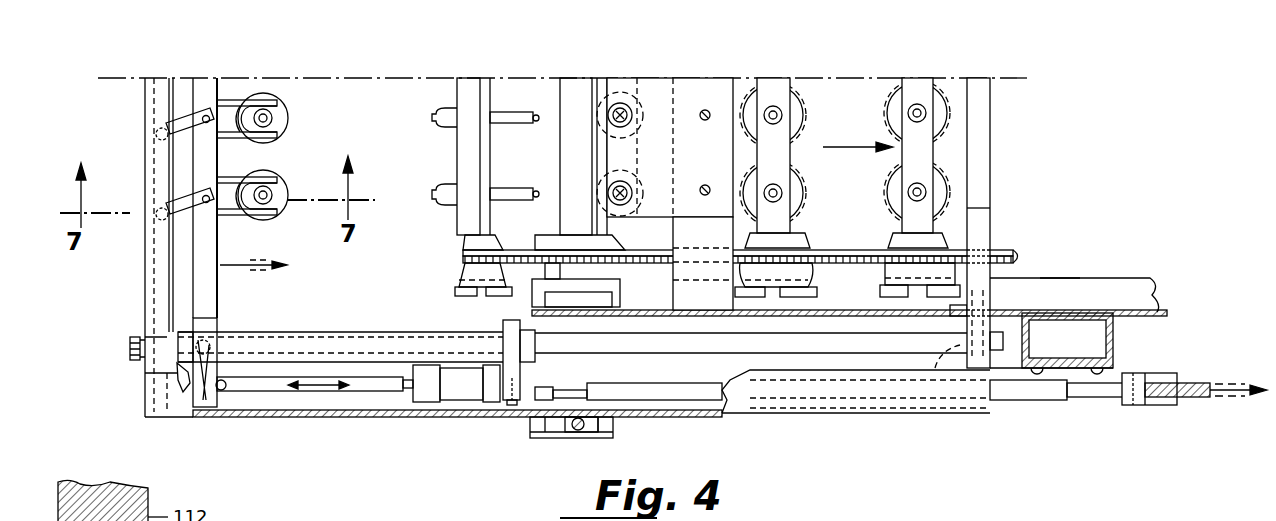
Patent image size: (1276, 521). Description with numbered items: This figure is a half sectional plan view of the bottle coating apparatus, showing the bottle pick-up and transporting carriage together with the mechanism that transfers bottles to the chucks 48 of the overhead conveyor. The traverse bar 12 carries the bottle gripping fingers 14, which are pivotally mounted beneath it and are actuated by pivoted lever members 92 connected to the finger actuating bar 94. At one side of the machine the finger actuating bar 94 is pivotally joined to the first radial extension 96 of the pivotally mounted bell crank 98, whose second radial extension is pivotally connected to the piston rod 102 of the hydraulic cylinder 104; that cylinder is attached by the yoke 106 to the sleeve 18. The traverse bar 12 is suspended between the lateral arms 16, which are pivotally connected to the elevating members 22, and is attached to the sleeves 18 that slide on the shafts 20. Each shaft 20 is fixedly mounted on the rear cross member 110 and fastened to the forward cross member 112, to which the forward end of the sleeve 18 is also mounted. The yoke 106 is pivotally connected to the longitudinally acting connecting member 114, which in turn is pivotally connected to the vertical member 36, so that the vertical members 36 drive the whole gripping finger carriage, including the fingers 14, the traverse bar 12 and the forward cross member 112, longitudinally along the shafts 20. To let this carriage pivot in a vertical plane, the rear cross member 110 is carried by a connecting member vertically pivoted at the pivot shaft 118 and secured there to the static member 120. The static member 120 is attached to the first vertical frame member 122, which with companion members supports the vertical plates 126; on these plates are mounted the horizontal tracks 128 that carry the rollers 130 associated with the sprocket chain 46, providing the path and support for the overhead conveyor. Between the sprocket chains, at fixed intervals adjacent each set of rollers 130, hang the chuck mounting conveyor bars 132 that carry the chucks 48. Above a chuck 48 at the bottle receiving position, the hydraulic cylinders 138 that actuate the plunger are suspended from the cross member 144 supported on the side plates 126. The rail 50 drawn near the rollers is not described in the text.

The traverse bar 12 is at (217, 292).
The bottle gripping fingers 14 is at (287, 188).
The lateral arms 16 is at (316, 428).
The sleeve 18 is at (355, 331).
The shaft 20 is at (713, 343).
The elevating members 22 is at (579, 430).
The vertical members 36 is at (1197, 398).
The sprocket chain 46 is at (1005, 248).
The chucks 48 is at (513, 119).
The rail 50 is at (512, 251).
The pivoted lever members 92 is at (170, 197).
The finger actuating bar 94 is at (174, 95).
The first radial extension 96 is at (183, 385).
The bell crank 98 is at (204, 396).
The piston rod 102 is at (380, 390).
The hydraulic cylinder 104 is at (467, 392).
The yoke 106 is at (516, 370).
The rear cross member 110 is at (983, 167).
The forward cross member 112 is at (145, 284).
The longitudinally acting connecting member 114 is at (725, 395).
The pivot shaft 118 is at (933, 423).
The static member 120 is at (1113, 368).
The first vertical frame member 122 is at (1113, 340).
The vertical plates 126 is at (1060, 297).
The horizontal tracks 128 is at (1130, 297).
The rollers 130 is at (497, 295).
The chuck mounting conveyor bars 132 is at (457, 151).
The hydraulic cylinders 138 is at (632, 123).
The cross member 144 is at (713, 233).